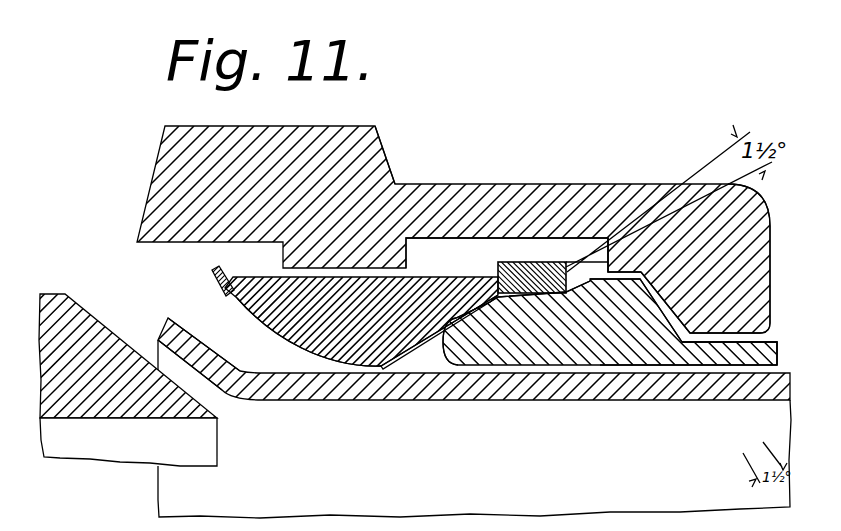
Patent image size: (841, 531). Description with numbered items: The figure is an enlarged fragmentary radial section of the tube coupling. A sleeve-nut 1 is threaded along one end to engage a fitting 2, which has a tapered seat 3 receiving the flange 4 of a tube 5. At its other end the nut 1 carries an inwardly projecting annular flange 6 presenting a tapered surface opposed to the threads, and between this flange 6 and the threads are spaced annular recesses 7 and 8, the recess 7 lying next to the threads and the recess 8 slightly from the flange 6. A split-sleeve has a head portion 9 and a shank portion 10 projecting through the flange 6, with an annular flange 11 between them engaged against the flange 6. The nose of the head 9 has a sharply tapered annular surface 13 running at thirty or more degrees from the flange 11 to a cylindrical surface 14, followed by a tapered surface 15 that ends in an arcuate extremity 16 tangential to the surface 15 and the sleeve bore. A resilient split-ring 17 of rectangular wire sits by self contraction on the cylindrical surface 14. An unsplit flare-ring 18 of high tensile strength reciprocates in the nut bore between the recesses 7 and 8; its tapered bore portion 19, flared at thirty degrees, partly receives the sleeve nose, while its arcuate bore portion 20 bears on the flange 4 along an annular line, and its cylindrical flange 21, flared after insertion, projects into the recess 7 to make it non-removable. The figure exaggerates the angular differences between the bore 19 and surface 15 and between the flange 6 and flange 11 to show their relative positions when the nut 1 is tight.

The sleeve-nut 1 is at (385, 128).
The fitting 2 is at (85, 410).
The tapered seat 3 is at (112, 332).
The flange 4 is at (202, 345).
The tube 5 is at (593, 388).
The annular flange 6 is at (690, 280).
The annular recess 7 is at (165, 248).
The annular recess 8 is at (450, 250).
The head portion 9 is at (627, 343).
The shank portion 10 is at (730, 348).
The annular flange 11 is at (662, 322).
The sharply tapered annular surface 13 is at (574, 285).
The cylindrical surface 14 is at (533, 300).
The tapered surface 15 is at (482, 315).
The arcuate extremity 16 is at (447, 325).
The split-ring 17 is at (523, 267).
The flare-ring 18 is at (357, 292).
The tapered bore portion 19 is at (413, 352).
The bore portion 20 is at (298, 352).
The cylindrical flange 21 is at (212, 273).